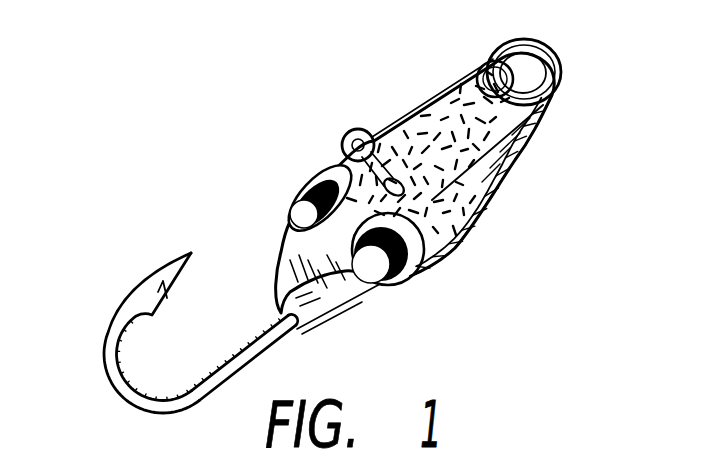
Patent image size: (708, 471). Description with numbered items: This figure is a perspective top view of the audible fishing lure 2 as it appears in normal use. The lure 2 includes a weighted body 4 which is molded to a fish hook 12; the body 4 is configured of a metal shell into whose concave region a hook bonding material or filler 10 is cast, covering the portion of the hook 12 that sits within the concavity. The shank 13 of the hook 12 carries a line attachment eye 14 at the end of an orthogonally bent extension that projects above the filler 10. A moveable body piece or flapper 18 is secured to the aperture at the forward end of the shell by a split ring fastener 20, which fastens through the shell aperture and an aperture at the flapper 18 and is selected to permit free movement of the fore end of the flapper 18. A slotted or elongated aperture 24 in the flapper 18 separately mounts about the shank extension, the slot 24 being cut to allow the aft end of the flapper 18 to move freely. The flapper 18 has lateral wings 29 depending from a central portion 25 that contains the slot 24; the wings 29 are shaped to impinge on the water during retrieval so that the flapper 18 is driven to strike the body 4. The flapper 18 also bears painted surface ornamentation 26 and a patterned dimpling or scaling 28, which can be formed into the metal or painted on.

The audible fishing lure 2 is at (212, 47).
The weighted body 4 is at (364, 318).
The hook bonding material or filler 10 is at (277, 292).
The fish hook 12 is at (100, 343).
The shank 13 is at (247, 353).
The line attachment eye 14 is at (353, 127).
The flapper 18 is at (497, 231).
The split ring fastener 20 is at (553, 61).
The slotted or elongated aperture 24 is at (400, 189).
The central portion 25 is at (483, 148).
The painted surface ornamentation 26 is at (293, 215).
The patterned dimpling or scaling 28 is at (468, 103).
The lateral wings 29 is at (336, 172).